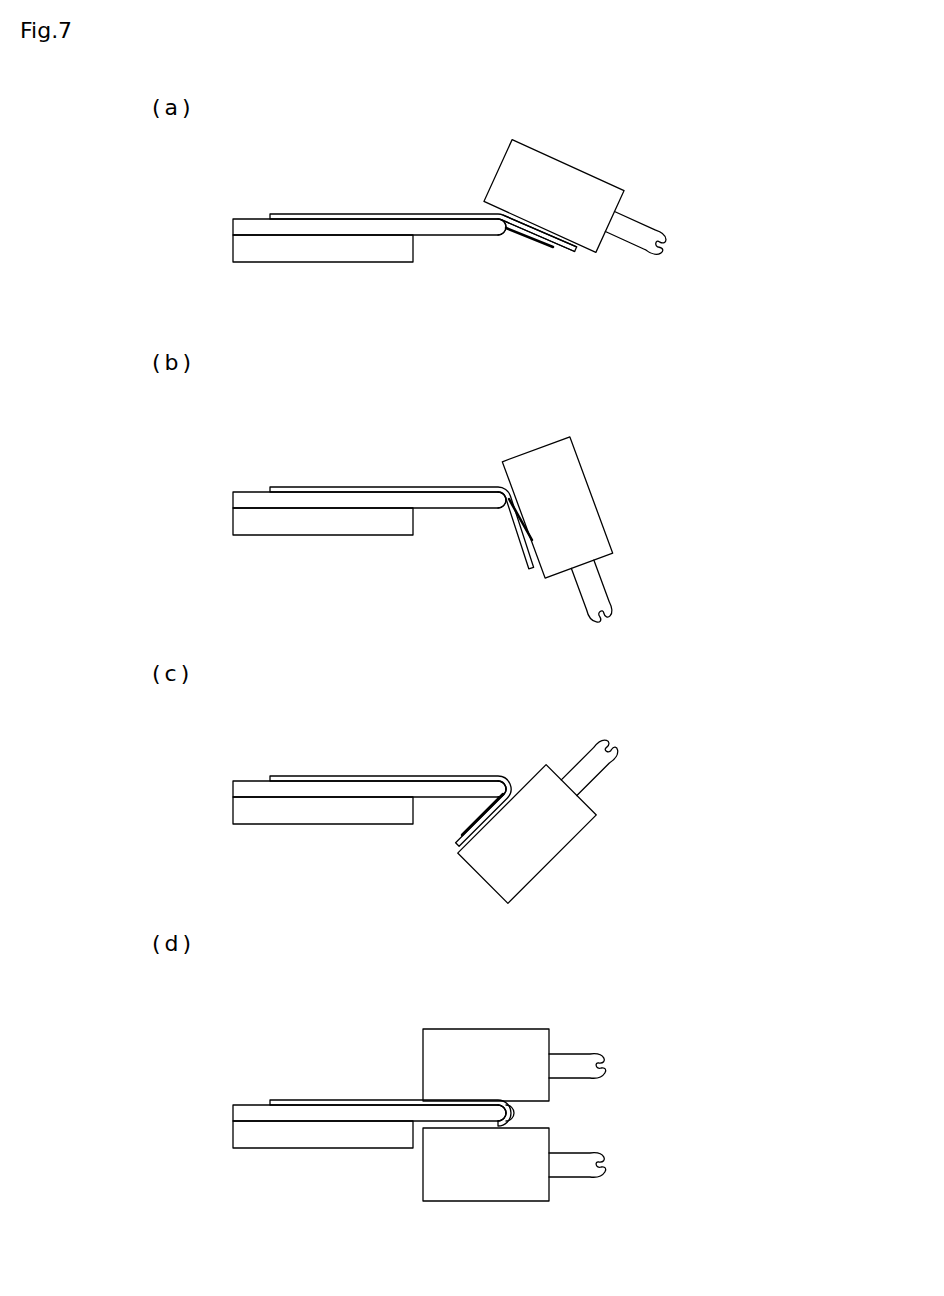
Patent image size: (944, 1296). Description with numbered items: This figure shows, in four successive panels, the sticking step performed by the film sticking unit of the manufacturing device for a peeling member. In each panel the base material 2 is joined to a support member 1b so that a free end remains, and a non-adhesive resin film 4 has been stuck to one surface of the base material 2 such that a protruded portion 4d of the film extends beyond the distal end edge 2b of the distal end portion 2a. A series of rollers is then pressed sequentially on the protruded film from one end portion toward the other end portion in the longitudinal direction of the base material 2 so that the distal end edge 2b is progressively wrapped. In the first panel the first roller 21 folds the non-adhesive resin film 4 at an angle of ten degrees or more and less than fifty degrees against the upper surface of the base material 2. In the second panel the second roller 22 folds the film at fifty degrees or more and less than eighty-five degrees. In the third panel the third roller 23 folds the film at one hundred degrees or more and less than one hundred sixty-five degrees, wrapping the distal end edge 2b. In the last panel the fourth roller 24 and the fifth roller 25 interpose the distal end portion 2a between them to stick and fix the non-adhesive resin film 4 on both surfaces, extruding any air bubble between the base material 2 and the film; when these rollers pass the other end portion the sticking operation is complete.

The support member 1b is at (247, 248).
The base material 2 is at (257, 228).
The non-adhesive resin film 4 is at (390, 216).
The distal end portion 2a is at (488, 229).
The distal end edge 2b is at (515, 233).
The protruded portion 4d is at (565, 253).
The first roller 21 is at (603, 197).
The second roller 22 is at (573, 502).
The third roller 23 is at (553, 833).
The fourth roller 24 is at (490, 1190).
The fifth roller 25 is at (507, 1043).